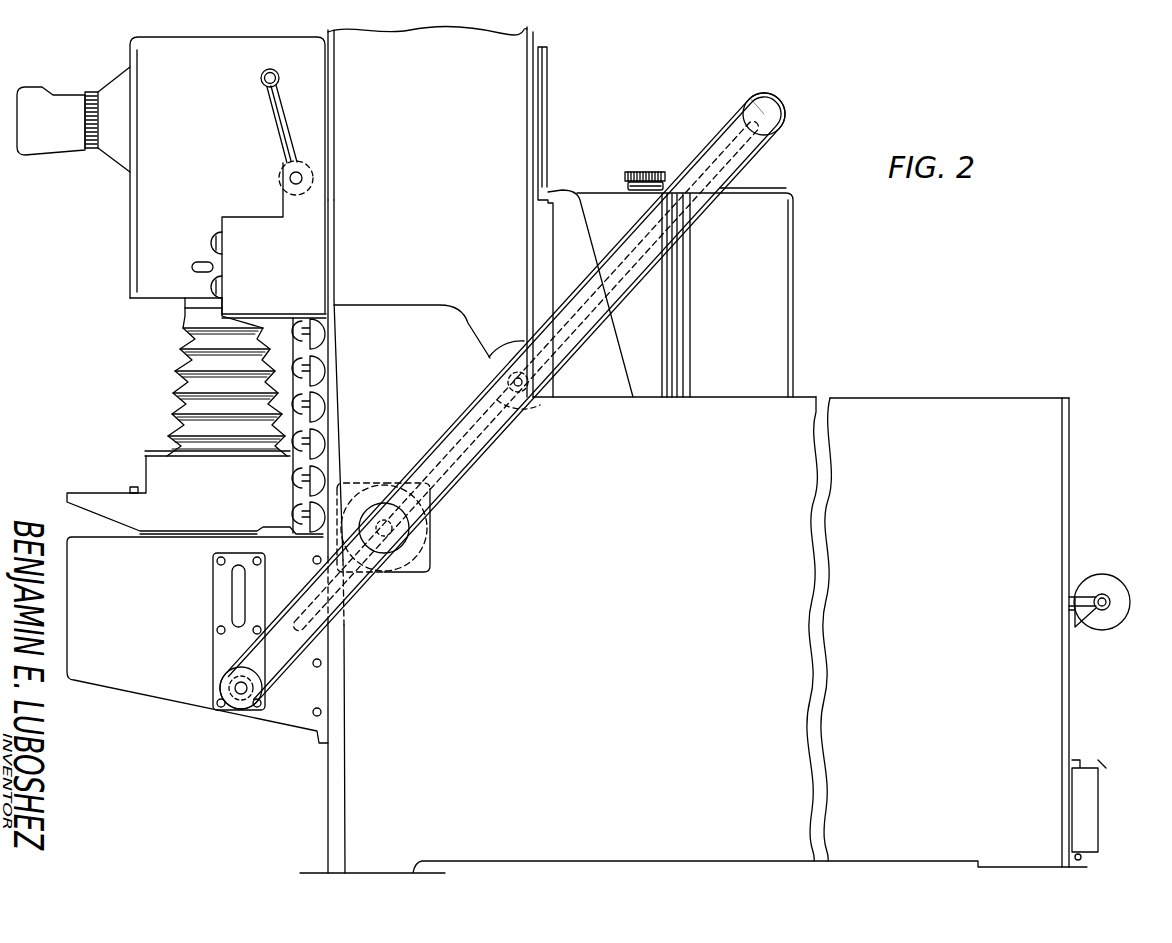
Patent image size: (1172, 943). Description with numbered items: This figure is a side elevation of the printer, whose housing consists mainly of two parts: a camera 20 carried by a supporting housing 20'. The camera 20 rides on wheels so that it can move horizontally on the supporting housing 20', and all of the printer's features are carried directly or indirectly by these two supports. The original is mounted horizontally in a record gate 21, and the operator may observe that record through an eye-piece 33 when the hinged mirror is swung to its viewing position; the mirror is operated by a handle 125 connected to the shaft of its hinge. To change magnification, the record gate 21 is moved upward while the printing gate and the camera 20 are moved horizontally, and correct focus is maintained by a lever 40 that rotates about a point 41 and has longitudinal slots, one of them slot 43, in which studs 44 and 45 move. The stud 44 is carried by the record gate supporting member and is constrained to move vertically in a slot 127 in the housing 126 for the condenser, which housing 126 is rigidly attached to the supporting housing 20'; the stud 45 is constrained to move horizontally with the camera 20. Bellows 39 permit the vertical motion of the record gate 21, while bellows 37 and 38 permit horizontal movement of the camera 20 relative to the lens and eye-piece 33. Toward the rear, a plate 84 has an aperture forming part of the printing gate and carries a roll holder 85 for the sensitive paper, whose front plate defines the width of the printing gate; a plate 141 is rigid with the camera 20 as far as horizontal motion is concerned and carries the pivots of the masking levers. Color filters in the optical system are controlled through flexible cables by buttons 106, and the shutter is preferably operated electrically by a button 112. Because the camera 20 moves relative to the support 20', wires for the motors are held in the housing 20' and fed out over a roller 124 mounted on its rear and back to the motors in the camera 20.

The camera 20 is at (465, 218).
The supporting housing 20' is at (703, 635).
The record gate 21 is at (197, 455).
The eye-piece 33 is at (45, 138).
The bellows 37 is at (333, 237).
The bellows 38 is at (331, 108).
The bellows 39 is at (182, 352).
The lever 40 is at (478, 466).
The point 41 is at (385, 575).
The longitudinal slot 43 is at (714, 158).
The stud 44 is at (238, 703).
The stud 45 is at (530, 400).
The plate 84 is at (563, 196).
The roll holder 85 is at (685, 284).
The buttons 106 is at (296, 443).
The button 112 is at (197, 262).
The roller 124 is at (1085, 590).
The handle 125 is at (268, 124).
The housing 126 is at (123, 668).
The slot 127 is at (232, 598).
The plate 141 is at (539, 199).